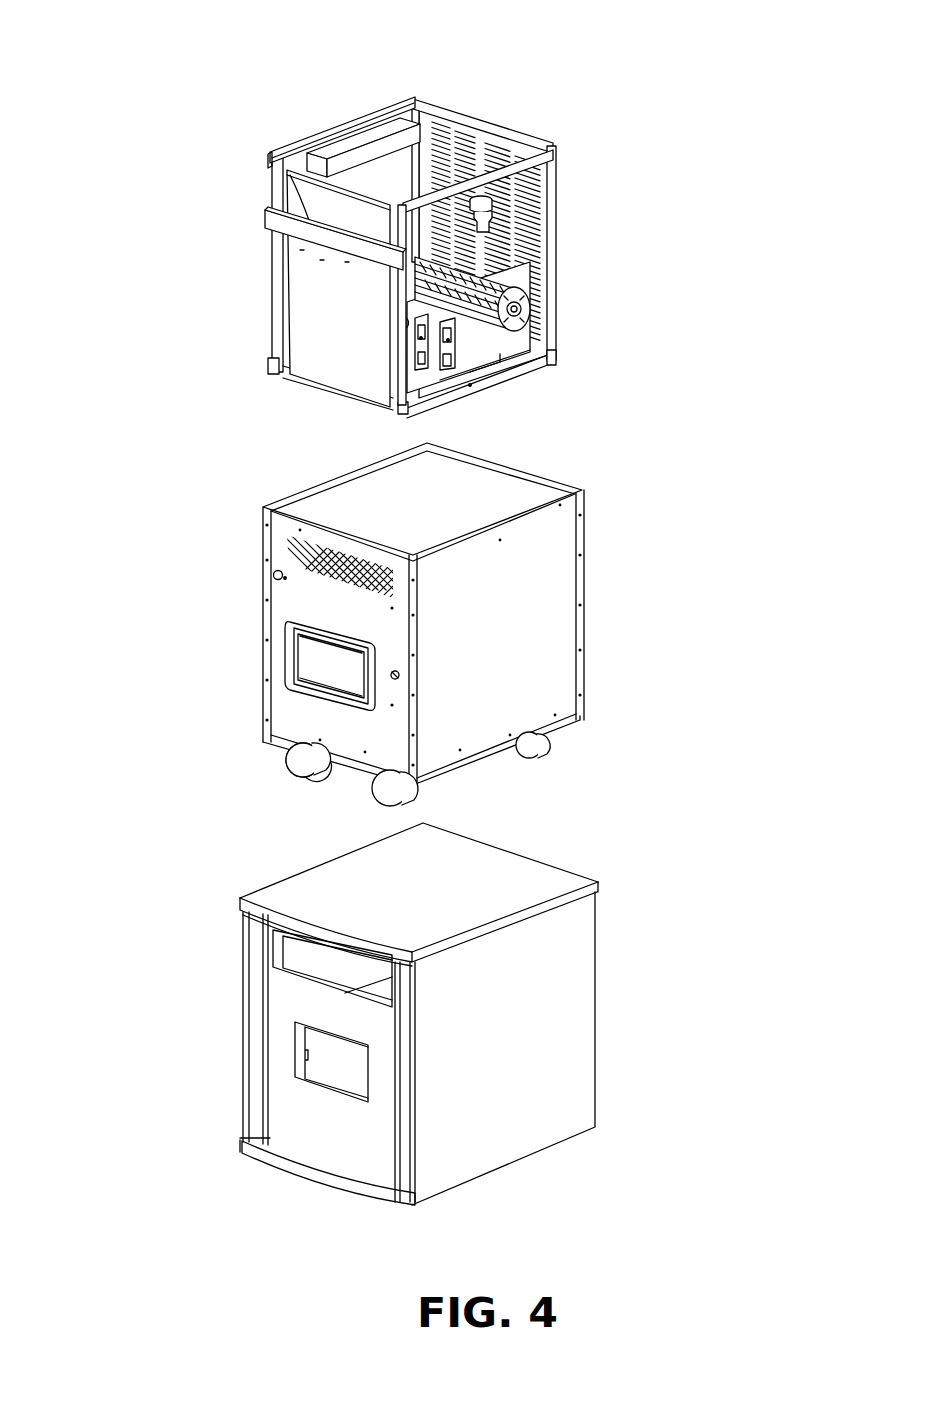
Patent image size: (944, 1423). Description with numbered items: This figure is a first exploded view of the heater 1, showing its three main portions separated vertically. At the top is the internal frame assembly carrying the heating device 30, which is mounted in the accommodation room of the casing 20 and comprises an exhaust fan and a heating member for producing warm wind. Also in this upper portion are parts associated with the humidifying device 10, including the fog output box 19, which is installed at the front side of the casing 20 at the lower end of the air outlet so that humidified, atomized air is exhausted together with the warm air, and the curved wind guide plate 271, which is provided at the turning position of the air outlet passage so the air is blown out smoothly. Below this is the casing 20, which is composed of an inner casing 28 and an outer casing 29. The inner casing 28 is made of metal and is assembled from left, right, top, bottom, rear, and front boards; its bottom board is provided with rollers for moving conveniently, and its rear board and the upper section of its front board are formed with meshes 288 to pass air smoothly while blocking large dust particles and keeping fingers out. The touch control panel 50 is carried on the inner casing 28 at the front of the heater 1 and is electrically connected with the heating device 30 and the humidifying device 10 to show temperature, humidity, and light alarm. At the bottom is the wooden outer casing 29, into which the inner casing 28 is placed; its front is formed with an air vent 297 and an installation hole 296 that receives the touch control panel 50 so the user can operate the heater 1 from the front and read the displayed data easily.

The heater 1 is at (198, 92).
The humidifying device 10 is at (333, 152).
The curved wind guide plate 271 is at (317, 202).
The fog output box 19 is at (293, 230).
The heating device 30 is at (537, 303).
The casing 20 is at (118, 738).
The inner casing 28 is at (243, 712).
The meshes 288 is at (288, 550).
The touch control panel 50 is at (303, 660).
The outer casing 29 is at (238, 895).
The air vent 297 is at (282, 957).
The installation hole 296 is at (307, 1065).